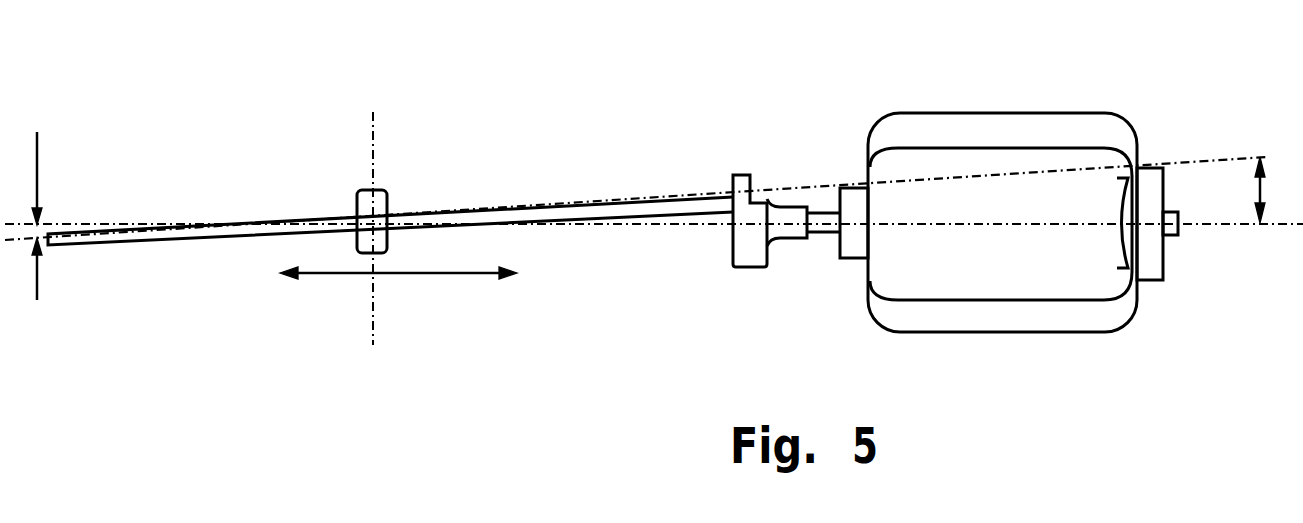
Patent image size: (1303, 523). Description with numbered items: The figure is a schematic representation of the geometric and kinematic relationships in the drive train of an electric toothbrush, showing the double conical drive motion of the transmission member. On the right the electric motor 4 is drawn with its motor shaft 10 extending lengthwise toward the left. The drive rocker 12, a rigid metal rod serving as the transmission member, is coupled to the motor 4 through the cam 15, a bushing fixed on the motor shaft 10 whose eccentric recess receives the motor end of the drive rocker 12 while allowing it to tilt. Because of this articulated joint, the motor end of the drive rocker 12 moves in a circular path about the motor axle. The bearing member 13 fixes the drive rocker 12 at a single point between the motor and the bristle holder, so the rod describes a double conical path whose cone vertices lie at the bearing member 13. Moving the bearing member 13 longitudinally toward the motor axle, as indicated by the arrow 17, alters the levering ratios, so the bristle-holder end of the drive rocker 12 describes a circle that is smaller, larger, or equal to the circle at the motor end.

The electric motor 4 is at (993, 158).
The motor shaft 10 is at (830, 232).
The drive rocker 12 is at (580, 200).
The bearing member 13 is at (355, 205).
The cam 15 is at (748, 258).
The arrow 17 is at (423, 273).